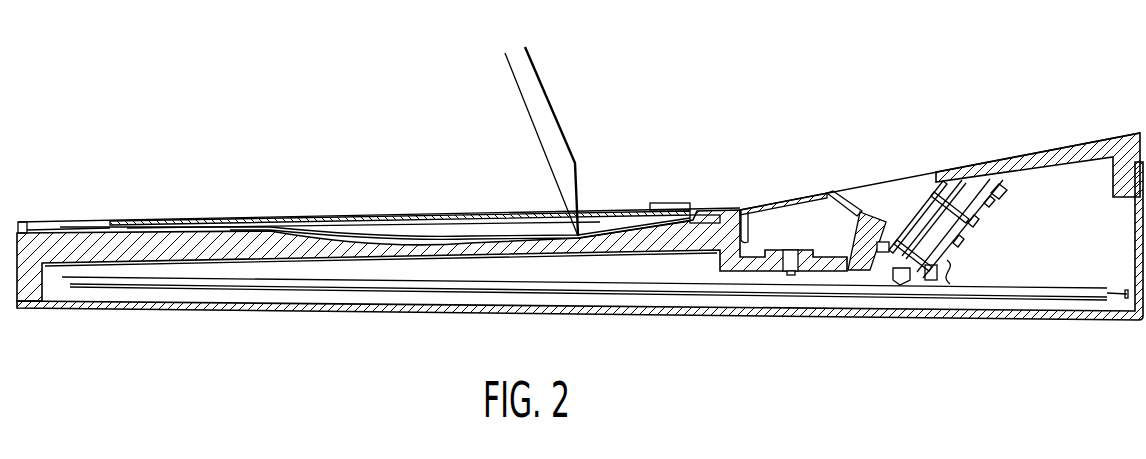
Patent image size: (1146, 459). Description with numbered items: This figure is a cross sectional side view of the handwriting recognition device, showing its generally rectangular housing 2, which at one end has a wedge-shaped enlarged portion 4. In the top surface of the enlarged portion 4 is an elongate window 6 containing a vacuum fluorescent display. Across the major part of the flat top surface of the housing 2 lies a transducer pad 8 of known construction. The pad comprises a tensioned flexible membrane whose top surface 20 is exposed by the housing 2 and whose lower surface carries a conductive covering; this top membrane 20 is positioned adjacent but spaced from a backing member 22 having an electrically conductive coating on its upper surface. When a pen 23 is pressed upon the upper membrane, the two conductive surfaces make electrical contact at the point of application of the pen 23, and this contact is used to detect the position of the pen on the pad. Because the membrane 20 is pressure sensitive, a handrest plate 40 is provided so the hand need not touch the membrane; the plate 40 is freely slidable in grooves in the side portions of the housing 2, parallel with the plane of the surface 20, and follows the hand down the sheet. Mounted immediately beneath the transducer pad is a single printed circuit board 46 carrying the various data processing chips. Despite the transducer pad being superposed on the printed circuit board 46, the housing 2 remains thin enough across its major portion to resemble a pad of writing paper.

The housing 2 is at (1026, 195).
The wedge-shaped enlarged portion 4 is at (1059, 152).
The elongate window 6 is at (923, 207).
The transducer pad 8 is at (425, 232).
The top membrane 20 is at (465, 222).
The backing member 22 is at (521, 236).
The pen 23 is at (538, 100).
The handrest plate 40 is at (345, 215).
The printed circuit board 46 is at (497, 290).